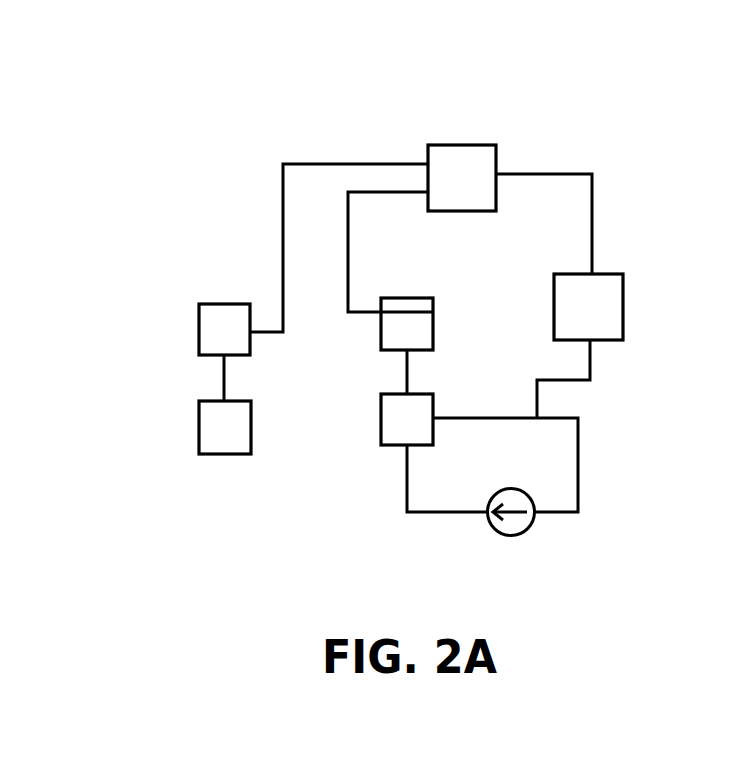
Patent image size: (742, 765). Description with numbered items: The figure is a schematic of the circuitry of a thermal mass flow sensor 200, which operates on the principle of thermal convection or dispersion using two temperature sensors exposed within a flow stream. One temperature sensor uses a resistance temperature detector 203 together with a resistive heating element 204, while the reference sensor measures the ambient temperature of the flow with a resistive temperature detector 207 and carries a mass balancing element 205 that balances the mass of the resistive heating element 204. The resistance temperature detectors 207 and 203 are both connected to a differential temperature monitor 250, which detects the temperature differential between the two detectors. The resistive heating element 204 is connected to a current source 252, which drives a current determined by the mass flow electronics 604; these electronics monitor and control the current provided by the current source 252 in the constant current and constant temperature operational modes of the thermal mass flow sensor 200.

The thermal mass flow sensor 200 is at (258, 114).
The differential temperature monitor 250 is at (463, 144).
The resistive temperature detector 207 is at (199, 324).
The mass balancing element 205 is at (199, 425).
The resistance temperature detector 203 is at (433, 311).
The resistive heating element 204 is at (433, 403).
The mass flow electronics 604 is at (623, 297).
The current source 252 is at (516, 536).